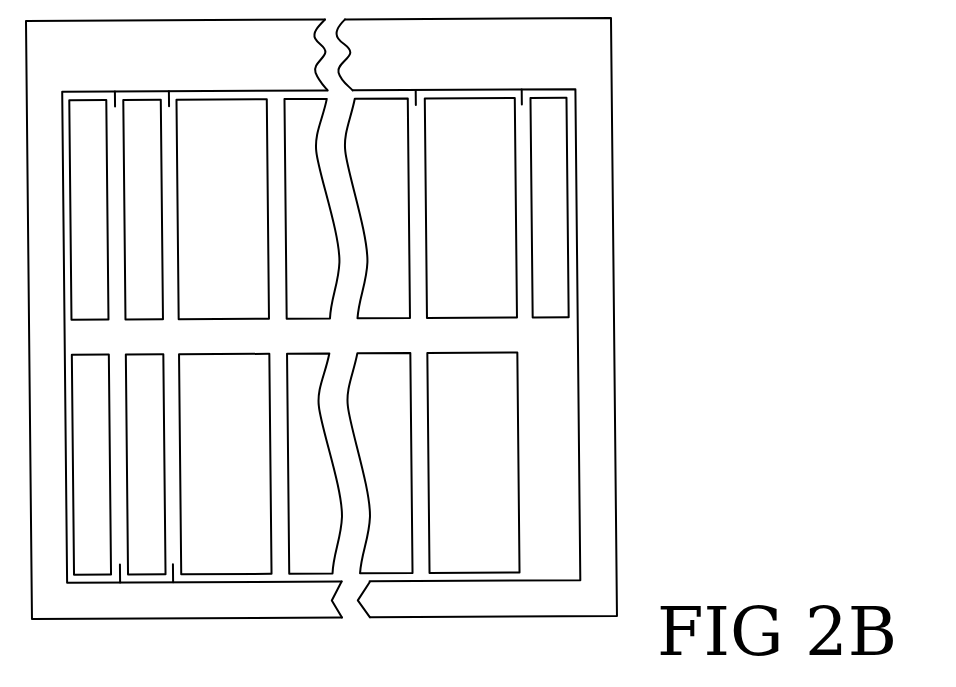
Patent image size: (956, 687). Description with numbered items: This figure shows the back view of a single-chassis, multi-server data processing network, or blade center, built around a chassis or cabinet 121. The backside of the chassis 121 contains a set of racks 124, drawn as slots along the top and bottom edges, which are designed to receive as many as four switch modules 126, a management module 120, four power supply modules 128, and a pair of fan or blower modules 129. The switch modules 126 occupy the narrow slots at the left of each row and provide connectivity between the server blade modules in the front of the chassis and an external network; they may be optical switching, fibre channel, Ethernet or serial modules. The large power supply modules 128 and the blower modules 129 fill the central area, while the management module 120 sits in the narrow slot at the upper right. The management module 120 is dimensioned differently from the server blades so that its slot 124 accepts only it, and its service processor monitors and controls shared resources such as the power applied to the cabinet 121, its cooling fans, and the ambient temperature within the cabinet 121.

The management module 120 is at (544, 298).
The chassis 121 is at (37, 60).
The racks 124 is at (114, 100).
The switch modules 126 is at (80, 296).
The power supply modules 128 is at (230, 242).
The fan or blower modules 129 is at (360, 184).